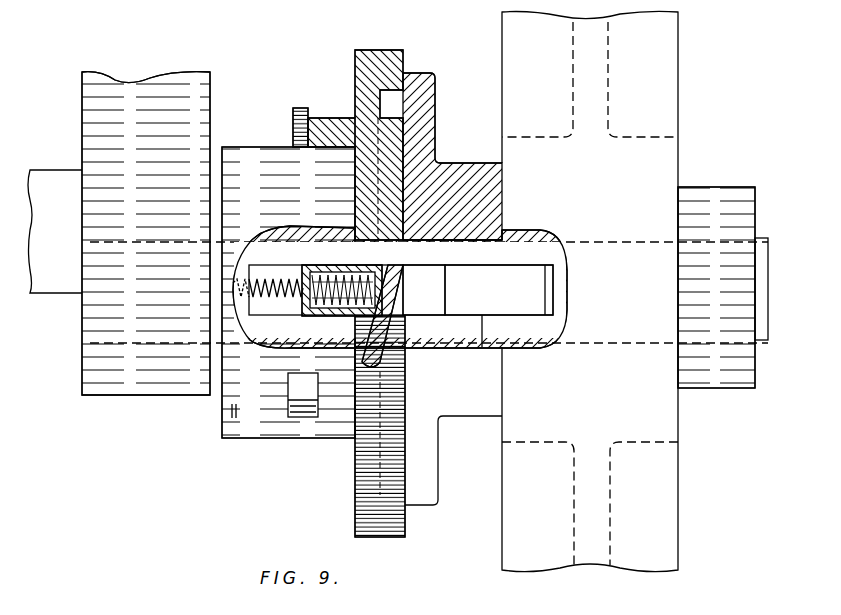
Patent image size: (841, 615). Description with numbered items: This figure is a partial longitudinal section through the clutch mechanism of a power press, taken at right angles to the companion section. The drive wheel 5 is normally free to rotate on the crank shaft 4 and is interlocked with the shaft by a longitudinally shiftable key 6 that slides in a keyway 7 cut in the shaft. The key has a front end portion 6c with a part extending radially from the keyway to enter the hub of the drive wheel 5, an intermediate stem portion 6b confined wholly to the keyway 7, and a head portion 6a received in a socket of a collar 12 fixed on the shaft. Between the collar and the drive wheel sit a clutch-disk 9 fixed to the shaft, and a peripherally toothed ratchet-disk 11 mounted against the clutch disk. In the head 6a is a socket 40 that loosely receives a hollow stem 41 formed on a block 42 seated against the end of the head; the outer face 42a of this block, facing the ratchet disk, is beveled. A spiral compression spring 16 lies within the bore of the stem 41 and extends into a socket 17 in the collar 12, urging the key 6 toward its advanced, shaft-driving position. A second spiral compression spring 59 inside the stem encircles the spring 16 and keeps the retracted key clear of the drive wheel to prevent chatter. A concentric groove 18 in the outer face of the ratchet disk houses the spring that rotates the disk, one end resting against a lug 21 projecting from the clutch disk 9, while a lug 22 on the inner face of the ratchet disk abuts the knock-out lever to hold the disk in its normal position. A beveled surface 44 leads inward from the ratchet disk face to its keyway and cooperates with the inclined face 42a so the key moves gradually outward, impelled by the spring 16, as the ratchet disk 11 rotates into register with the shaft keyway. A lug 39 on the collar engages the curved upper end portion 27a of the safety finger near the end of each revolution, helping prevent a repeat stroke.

The crank shaft 4 is at (543, 248).
The drive wheel 5 is at (678, 490).
The key 6 is at (499, 290).
The head portion 6a is at (302, 326).
The stem portion 6b is at (442, 327).
The front end portion 6c is at (527, 313).
The keyway 7 is at (263, 315).
The clutch-disk 9 is at (435, 131).
The ratchet-disk 11 is at (355, 519).
The collar 12 is at (243, 430).
The spiral compression spring 16 is at (270, 279).
The socket 17 is at (237, 290).
The groove 18 is at (380, 106).
The lug 21 is at (378, 94).
The lug 22 is at (322, 121).
The upper end portion 27a is at (293, 123).
The lug 39 is at (305, 398).
The socket 40 is at (342, 273).
The hollow stem 41 is at (368, 272).
The block 42 is at (395, 278).
The outer face 42a is at (404, 288).
The beveled surface 44 is at (398, 345).
The spiral compression spring 59 is at (318, 272).